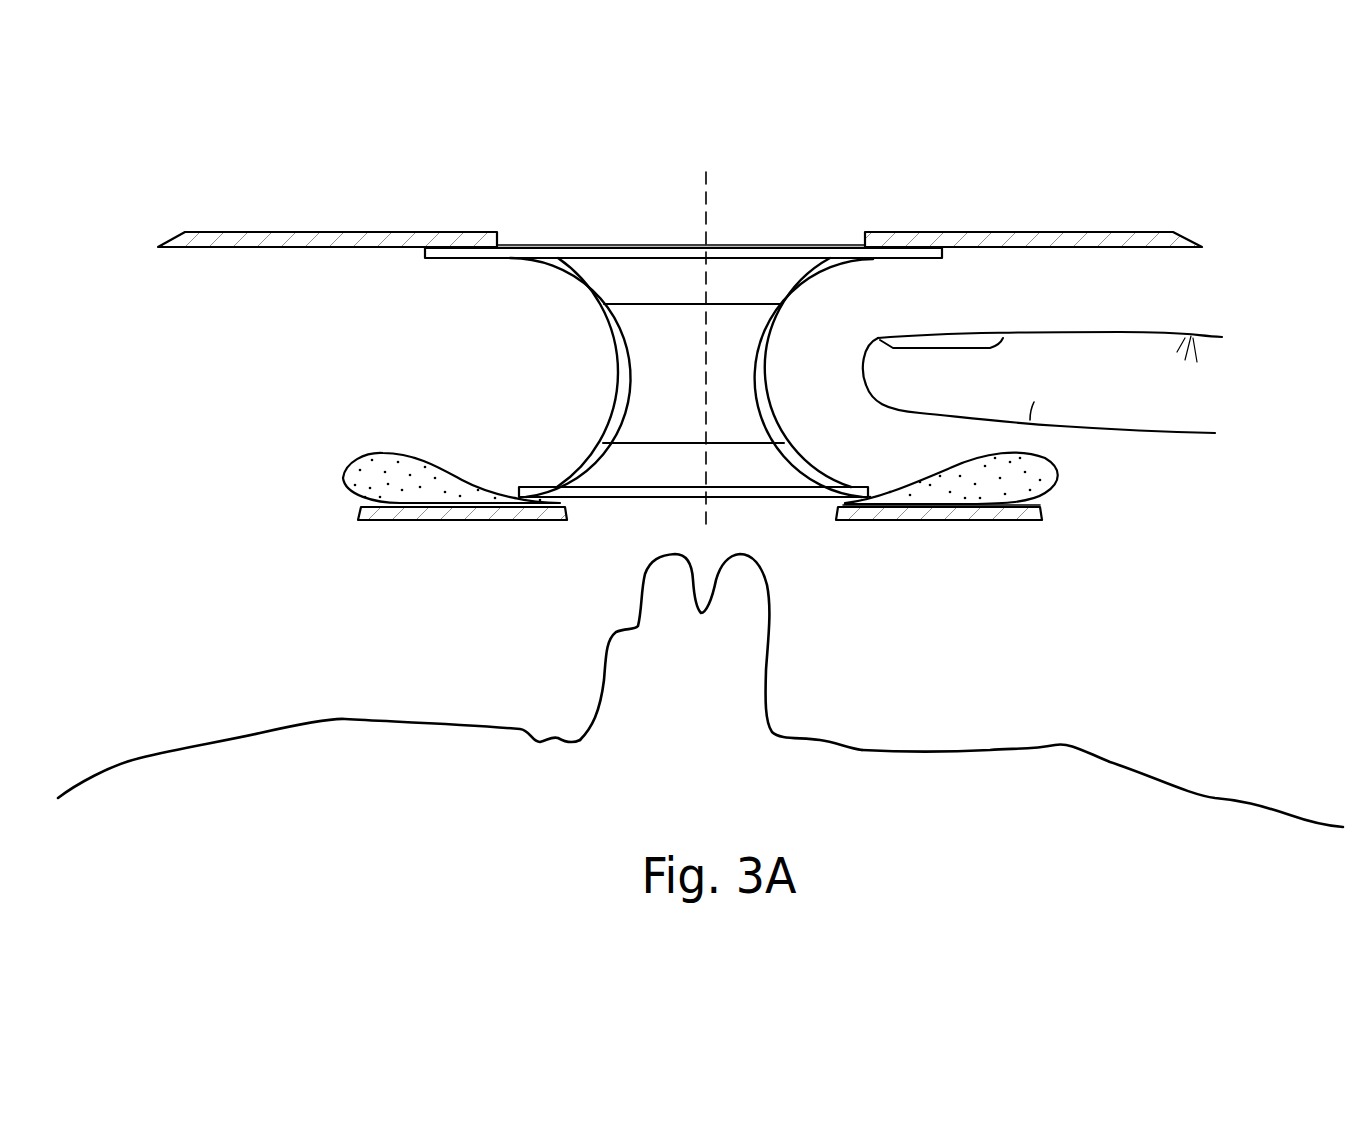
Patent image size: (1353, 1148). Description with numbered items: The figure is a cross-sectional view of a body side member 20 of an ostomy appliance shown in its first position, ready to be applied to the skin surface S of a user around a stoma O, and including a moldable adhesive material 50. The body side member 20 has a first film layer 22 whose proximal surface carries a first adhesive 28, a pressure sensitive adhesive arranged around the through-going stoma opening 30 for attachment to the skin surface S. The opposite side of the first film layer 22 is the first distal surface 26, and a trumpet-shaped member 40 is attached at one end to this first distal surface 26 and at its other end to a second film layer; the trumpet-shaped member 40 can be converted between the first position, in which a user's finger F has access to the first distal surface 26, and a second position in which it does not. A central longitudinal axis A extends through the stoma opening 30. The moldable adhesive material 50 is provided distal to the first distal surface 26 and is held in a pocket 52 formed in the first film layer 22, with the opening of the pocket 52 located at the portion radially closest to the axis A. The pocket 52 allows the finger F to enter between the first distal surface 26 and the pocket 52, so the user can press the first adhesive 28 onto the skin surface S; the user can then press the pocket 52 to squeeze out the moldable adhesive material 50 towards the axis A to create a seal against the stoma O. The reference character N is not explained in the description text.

The body side member 20 is at (982, 158).
The first film layer 22 is at (985, 521).
The first distal surface 26 is at (1040, 503).
The first adhesive 28 is at (415, 535).
The through-going stoma opening 30 is at (668, 280).
The trumpet-shaped member 40 is at (614, 344).
The moldable adhesive material 50 is at (1040, 463).
The pocket 52 is at (418, 460).
The central longitudinal axis A is at (706, 349).
The finger F is at (1185, 336).
The fingertip pad N is at (1140, 425).
The stoma O is at (755, 604).
The skin surface S is at (1298, 814).